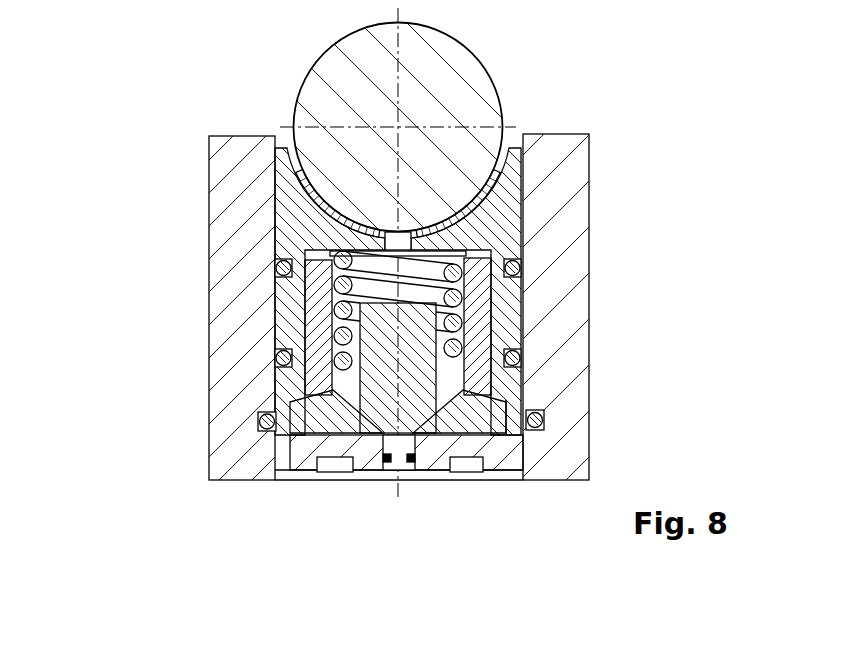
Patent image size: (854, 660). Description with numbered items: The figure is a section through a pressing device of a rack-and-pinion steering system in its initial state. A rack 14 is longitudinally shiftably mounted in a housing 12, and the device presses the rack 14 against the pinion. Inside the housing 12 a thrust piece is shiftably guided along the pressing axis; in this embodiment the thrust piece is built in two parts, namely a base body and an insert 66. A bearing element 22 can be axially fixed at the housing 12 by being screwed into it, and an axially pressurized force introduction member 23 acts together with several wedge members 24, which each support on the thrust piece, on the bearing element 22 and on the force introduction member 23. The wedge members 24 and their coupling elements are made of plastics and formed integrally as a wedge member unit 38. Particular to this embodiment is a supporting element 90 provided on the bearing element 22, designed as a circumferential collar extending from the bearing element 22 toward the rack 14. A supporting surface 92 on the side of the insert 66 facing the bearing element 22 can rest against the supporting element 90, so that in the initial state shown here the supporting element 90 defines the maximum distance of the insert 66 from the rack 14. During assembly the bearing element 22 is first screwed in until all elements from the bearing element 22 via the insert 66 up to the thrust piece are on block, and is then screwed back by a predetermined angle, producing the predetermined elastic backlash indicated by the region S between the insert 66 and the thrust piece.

The rack 14 is at (469, 62).
The housing 12 is at (579, 160).
The predetermined elastic backlash region S is at (500, 243).
The insert 66 is at (487, 308).
The force introduction member 23 is at (373, 330).
The wedge members 24 is at (427, 330).
The wedge member unit 38 is at (333, 424).
The bearing element 22 is at (434, 456).
The supporting surface 92 is at (546, 421).
The supporting element 90 is at (518, 424).